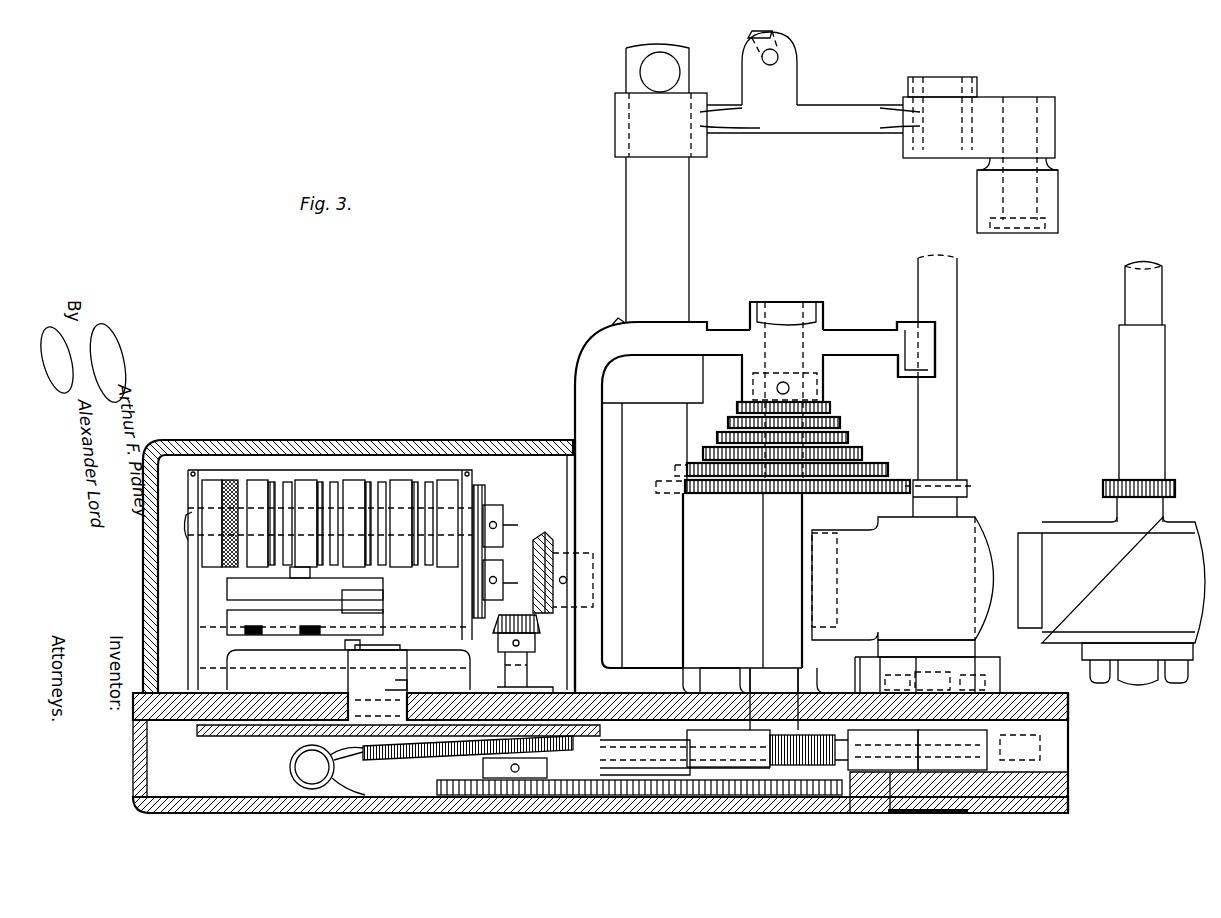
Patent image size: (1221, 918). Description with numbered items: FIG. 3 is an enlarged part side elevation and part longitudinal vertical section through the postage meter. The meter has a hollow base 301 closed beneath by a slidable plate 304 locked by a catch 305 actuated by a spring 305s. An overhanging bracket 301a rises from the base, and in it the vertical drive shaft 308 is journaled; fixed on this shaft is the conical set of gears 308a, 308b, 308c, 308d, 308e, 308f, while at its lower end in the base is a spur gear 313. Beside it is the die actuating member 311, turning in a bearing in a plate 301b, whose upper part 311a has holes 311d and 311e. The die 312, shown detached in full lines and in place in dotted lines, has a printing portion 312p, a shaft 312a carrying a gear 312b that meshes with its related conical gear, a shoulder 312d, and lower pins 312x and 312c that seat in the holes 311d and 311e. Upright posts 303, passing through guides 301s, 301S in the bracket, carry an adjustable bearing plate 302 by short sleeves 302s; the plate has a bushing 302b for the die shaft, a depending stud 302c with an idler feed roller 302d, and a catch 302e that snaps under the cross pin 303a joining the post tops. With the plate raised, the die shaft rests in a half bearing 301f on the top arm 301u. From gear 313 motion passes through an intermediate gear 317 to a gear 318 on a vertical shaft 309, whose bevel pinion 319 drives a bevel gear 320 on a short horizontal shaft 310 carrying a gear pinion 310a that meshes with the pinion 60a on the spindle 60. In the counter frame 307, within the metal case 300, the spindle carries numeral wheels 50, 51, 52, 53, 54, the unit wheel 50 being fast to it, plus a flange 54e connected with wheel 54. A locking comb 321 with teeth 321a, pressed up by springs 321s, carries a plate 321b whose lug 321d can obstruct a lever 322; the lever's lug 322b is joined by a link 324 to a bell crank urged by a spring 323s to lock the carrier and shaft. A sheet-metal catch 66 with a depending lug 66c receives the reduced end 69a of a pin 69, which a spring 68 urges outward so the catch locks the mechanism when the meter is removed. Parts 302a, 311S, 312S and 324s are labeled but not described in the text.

The housing 300 is at (262, 452).
The hollow base 301 is at (1030, 708).
The guide 301s is at (618, 320).
The guide 301S is at (808, 313).
The half bearing 301f is at (930, 342).
The top arm 301u is at (873, 347).
The overhanging bracket 301a is at (588, 437).
The plate 301b is at (1052, 797).
The bearing plate 302 is at (808, 117).
The beam lug 302a is at (782, 78).
The bearing 302b is at (965, 88).
The depending stud 302c is at (1030, 115).
The idler feed roller 302d is at (1050, 194).
The catch 302e is at (748, 42).
The short sleeve 302s is at (620, 136).
The upright post 303 is at (640, 226).
The cross pin 303a is at (660, 70).
The slidable plate 304 is at (213, 805).
The catch 305 is at (350, 745).
The spring 305s is at (293, 768).
The counter frame 307 is at (192, 622).
The drive shaft 308 is at (790, 515).
The conical gear 308a is at (910, 487).
The conical gear 308b is at (888, 470).
The conical gear 308c is at (862, 453).
The conical gear 308d is at (848, 439).
The conical gear 308e is at (840, 424).
The conical gear 308f is at (830, 407).
The vertical shaft 309 is at (522, 660).
The horizontal shaft 310 is at (518, 583).
The gear pinion 310a is at (481, 555).
The die actuating member 311 is at (957, 663).
The upper part 311a is at (880, 676).
The drum support 311S is at (900, 660).
The hole 311d is at (920, 676).
The hole 311e is at (975, 664).
The die 312 is at (1072, 558).
The die shaft 312a is at (1140, 394).
The die gear 312b is at (1160, 482).
The pin 312c is at (1177, 676).
The shoulder 312d is at (1162, 323).
The printing portion 312p is at (1032, 603).
The foot 312S is at (1101, 676).
The pin 312x is at (1142, 676).
The spur gear 313 is at (748, 693).
The intermediate gear 317 is at (688, 692).
The gear 318 is at (600, 775).
The bevel pinion 319 is at (540, 625).
The bevel gear 320 is at (547, 540).
The locking comb 321 is at (277, 615).
The teeth 321a is at (338, 578).
The plate 321b is at (348, 602).
The lug 321d is at (347, 657).
The spring 321s is at (312, 613).
The lever 322 is at (385, 677).
The lug 322b is at (393, 687).
The spring 323s is at (580, 751).
The link 324 is at (395, 728).
The rack spring 324s is at (410, 756).
The unit wheel 50 is at (450, 482).
The numeral wheel 51 is at (402, 482).
The numeral wheel 52 is at (357, 482).
The numeral wheel 53 is at (308, 482).
The numeral wheel 54 is at (257, 482).
The flange 54e is at (212, 482).
The spindle 60 is at (188, 513).
The pinion 60a is at (480, 484).
The catch 66 is at (800, 730).
The depending lug 66c is at (838, 692).
The spring 68 is at (737, 752).
The pin 69 is at (979, 750).
The reduced end 69a is at (823, 752).